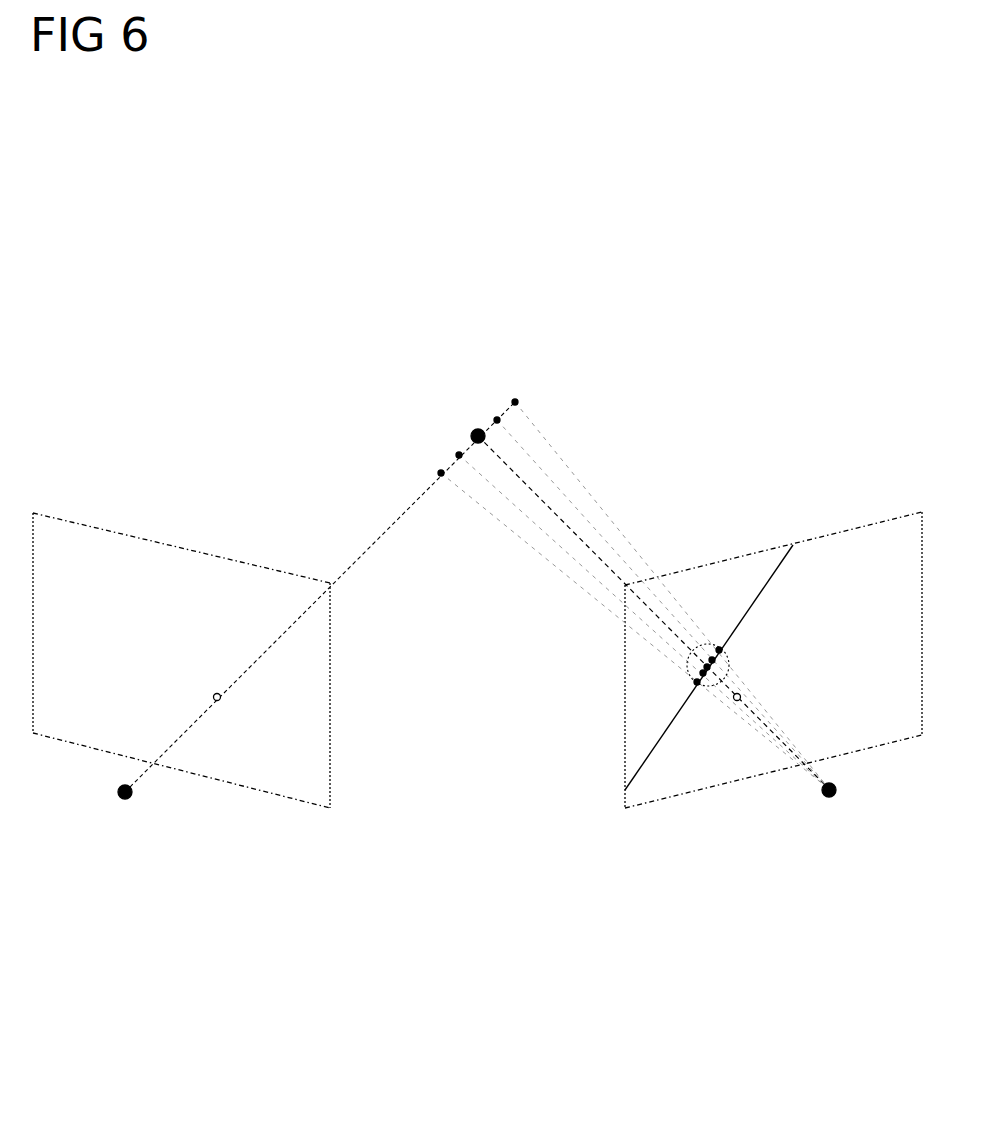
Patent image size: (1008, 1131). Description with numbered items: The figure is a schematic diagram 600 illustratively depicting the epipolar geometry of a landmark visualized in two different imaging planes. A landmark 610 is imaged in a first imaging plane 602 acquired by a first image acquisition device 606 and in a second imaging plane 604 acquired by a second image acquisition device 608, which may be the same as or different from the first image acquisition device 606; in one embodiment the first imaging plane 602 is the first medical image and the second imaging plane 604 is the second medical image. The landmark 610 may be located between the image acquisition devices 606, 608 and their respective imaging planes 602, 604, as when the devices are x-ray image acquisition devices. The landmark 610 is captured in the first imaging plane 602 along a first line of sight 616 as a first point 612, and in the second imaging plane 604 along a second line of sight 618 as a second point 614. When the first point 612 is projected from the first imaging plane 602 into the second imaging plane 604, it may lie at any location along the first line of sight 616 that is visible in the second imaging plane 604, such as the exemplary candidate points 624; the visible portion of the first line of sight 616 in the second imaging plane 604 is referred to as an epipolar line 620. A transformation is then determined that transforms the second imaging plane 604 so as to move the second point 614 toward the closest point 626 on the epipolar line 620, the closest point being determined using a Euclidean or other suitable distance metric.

The schematic diagram 600 is at (535, 67).
The imaging plane 602 is at (65, 510).
The imaging plane 604 is at (878, 512).
The image acquisition device A1 606 is at (114, 844).
The image acquisition device A2 608 is at (826, 844).
The landmark P 610 is at (480, 411).
The point P1 612 is at (210, 677).
The point P2 614 is at (735, 715).
The line of sight 616 is at (355, 542).
The line of sight 618 is at (556, 501).
The epipolar line 620 is at (636, 750).
The candidate points 624 is at (694, 705).
The point 626 is at (734, 669).